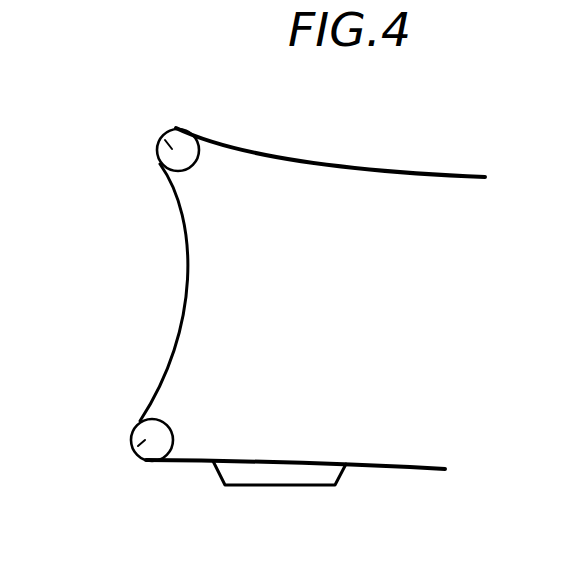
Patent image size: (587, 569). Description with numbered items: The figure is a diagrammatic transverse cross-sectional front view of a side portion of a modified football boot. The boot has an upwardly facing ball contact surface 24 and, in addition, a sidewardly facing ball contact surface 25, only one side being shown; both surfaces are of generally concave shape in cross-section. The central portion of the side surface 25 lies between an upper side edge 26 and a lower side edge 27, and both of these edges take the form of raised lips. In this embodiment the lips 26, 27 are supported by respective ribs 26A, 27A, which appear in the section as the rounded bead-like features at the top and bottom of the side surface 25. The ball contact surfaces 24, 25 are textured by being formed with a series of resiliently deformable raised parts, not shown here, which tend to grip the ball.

The upwardly facing ball contact surface 24 is at (345, 168).
The sidewardly facing ball contact surface 25 is at (186, 292).
The upper side edge 26 is at (173, 128).
The rib 26A is at (170, 152).
The lower side edge 27 is at (139, 459).
The rib 27A is at (145, 440).